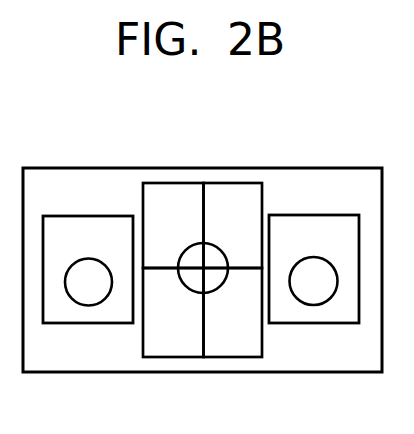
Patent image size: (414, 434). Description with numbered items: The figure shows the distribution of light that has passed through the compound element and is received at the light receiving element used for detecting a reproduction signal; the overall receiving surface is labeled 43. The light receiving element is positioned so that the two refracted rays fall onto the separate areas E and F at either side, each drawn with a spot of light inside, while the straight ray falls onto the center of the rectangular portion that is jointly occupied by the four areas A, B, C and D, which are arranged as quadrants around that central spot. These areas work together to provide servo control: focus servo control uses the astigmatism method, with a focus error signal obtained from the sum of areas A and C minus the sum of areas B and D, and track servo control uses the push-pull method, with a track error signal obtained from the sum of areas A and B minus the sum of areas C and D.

The sensor arrangement / substrate 43 is at (202, 289).
The area A is at (173, 225).
The area B is at (173, 312).
The area C is at (232, 312).
The area D is at (232, 225).
The area E is at (88, 269).
The area F is at (314, 269).